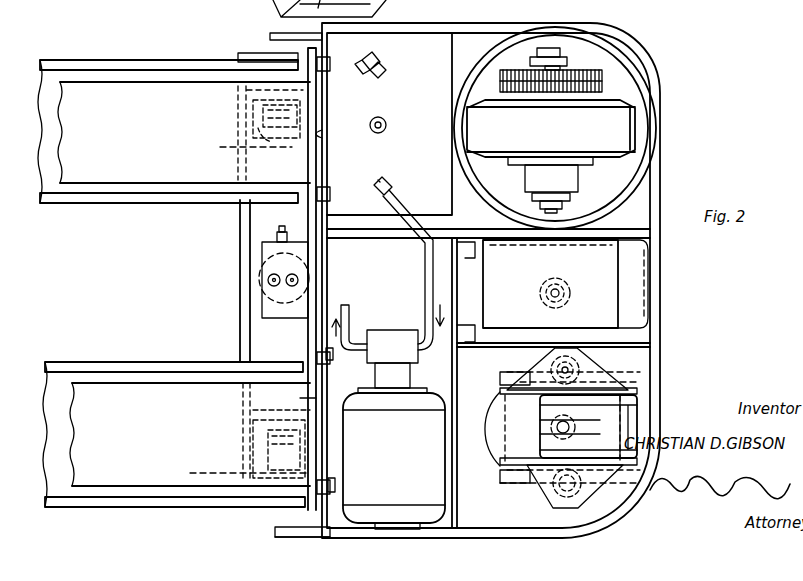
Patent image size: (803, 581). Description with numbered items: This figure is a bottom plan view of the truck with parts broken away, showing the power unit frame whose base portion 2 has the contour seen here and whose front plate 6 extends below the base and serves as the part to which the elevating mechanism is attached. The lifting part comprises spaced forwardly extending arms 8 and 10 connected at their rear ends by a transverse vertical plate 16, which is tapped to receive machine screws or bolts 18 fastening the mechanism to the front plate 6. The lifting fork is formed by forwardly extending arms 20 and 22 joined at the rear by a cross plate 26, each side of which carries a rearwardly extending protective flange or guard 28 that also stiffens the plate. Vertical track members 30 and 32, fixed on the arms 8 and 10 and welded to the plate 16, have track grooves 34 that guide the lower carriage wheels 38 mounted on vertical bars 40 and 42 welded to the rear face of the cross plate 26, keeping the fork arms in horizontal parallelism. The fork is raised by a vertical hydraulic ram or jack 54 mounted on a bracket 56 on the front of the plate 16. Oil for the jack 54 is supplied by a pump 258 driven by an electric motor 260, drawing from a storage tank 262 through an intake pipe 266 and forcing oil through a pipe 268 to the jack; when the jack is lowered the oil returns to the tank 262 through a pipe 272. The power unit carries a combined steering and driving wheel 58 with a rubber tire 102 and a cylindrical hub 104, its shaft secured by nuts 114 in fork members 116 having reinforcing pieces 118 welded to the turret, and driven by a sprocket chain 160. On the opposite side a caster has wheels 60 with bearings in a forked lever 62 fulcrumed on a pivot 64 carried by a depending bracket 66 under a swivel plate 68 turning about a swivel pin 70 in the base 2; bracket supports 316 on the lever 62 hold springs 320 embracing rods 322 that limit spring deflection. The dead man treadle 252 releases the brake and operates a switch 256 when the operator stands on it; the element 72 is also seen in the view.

The base portion 2 is at (668, 194).
The front plate 6 is at (272, 33).
The forwardly extending arm 8 is at (116, 392).
The forwardly extending arm 10 is at (122, 96).
The transverse vertical plate 16 is at (302, 400).
The machine screws or bolts 18 is at (330, 64).
The fork arm 20 is at (64, 362).
The fork arm 22 is at (78, 55).
The cross plate 26 is at (240, 301).
The protective flange or guard 28 is at (240, 55).
The vertical track member 30 is at (340, 148).
The vertical track member 32 is at (258, 410).
The track groove 34 is at (253, 123).
The lower carriage wheel 38 is at (232, 452).
The vertical plate or bar 40 is at (234, 472).
The vertical plate or bar 42 is at (243, 88).
The hydraulic ram or jack 54 is at (262, 278).
The bracket 56 is at (276, 320).
The steering and driving wheel 58 is at (645, 121).
The caster wheels 60 is at (637, 402).
The forked lever 62 is at (500, 392).
The pivot 64 is at (520, 450).
The depending bracket 66 is at (530, 380).
The swivel plate 68 is at (520, 430).
The swivel pin 70 is at (566, 418).
The partition 72 is at (640, 360).
The rubber tire 102 is at (628, 137).
The cylindrical hub 104 is at (572, 182).
The nuts 114 is at (553, 52).
The fork members 116 is at (565, 66).
The reinforcing pieces 118 is at (560, 60).
The sprocket chain 160 is at (600, 88).
The dead man treadle 252 is at (625, 282).
The switch 256 is at (567, 285).
The pump 258 is at (393, 330).
The electric motor 260 is at (322, 526).
The storage tank 262 is at (440, 68).
The intake pipe 266 is at (418, 198).
The pipe 268 is at (350, 328).
The pipe 272 is at (362, 74).
The bracket support 316 is at (600, 383).
The spring 320 is at (548, 362).
The rod 322 is at (570, 356).